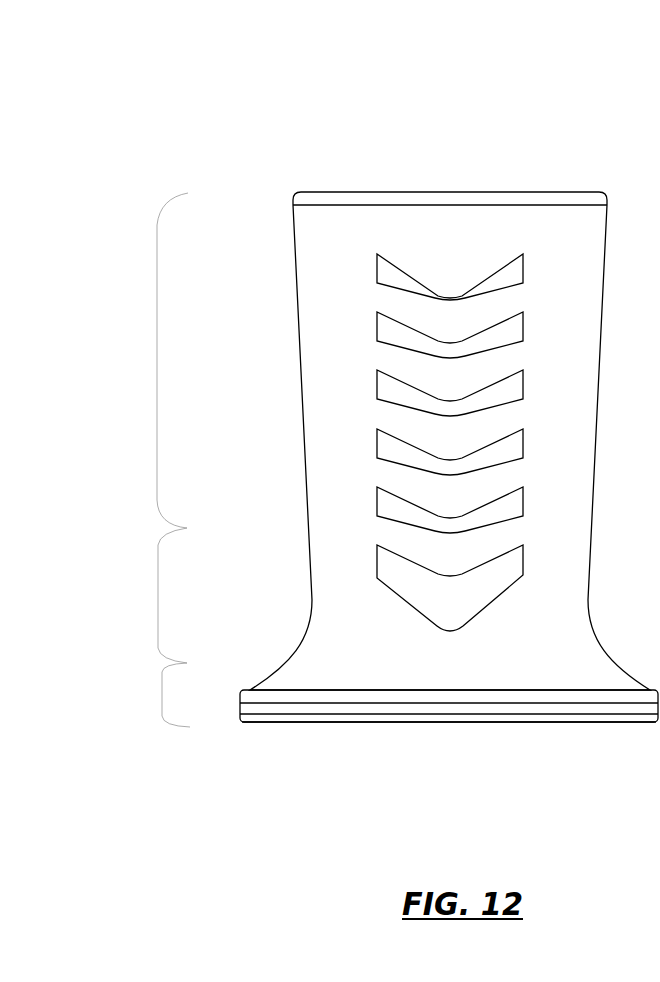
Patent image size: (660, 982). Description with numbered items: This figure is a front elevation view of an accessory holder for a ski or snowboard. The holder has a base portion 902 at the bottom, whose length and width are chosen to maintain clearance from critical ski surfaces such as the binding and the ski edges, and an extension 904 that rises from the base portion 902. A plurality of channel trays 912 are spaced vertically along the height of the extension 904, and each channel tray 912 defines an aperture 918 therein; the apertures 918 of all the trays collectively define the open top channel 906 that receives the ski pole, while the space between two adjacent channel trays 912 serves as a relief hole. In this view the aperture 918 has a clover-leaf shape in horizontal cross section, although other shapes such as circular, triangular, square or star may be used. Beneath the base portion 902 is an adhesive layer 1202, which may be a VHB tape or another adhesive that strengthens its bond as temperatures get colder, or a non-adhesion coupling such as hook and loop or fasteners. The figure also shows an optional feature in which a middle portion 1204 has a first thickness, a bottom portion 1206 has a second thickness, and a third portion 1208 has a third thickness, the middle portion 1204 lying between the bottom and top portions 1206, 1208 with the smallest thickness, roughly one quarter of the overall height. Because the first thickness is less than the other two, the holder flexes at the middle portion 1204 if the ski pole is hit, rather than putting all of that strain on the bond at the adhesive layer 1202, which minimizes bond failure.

The open top channel 906 is at (449, 381).
The aperture 918 is at (456, 172).
The extension 904 is at (435, 347).
The channel trays 912 is at (398, 552).
The base portion 902 is at (385, 682).
The adhesive layer 1202 is at (255, 720).
The middle portion 1204 is at (158, 597).
The bottom portion 1206 is at (162, 693).
The third portion 1208 is at (157, 363).